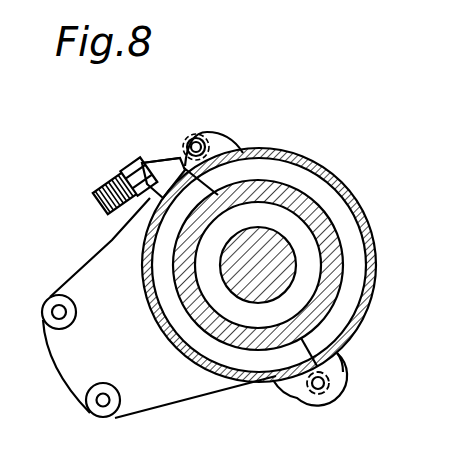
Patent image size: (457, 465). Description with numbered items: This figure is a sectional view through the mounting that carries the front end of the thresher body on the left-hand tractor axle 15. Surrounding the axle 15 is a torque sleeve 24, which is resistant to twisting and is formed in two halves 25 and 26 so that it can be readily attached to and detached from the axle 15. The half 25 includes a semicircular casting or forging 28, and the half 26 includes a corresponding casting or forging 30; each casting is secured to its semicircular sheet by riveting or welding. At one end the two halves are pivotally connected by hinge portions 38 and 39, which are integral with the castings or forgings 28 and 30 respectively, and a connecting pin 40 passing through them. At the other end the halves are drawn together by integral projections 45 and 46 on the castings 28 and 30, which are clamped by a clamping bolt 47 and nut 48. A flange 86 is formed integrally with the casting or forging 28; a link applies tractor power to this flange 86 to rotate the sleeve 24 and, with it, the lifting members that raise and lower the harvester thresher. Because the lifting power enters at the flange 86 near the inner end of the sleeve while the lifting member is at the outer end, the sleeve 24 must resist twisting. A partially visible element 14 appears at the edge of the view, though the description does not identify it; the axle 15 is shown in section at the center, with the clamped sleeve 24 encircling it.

The housing 14 is at (5, 166).
The left-hand tractor axle 15 is at (248, 302).
The torque sleeve 24 is at (367, 221).
The half 25 is at (197, 367).
The half 26 is at (305, 162).
The casting or forging 28 is at (335, 182).
The casting or forging 30 is at (235, 387).
The hinge portion 38 is at (293, 390).
The hinge portion 39 is at (340, 368).
The connecting pin 40 is at (340, 392).
The integral projection 45 is at (152, 165).
The integral projection 46 is at (217, 147).
The clamping bolt 47 is at (165, 160).
The clamping nut 48 is at (127, 168).
The flange 86 is at (70, 362).